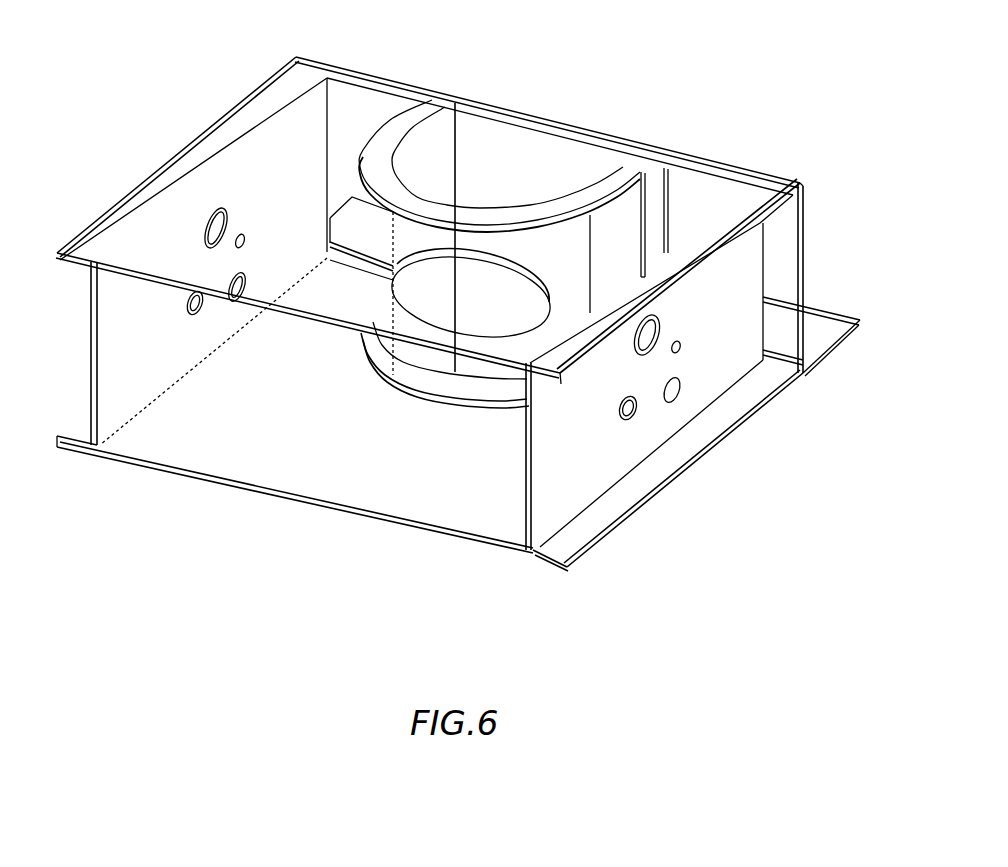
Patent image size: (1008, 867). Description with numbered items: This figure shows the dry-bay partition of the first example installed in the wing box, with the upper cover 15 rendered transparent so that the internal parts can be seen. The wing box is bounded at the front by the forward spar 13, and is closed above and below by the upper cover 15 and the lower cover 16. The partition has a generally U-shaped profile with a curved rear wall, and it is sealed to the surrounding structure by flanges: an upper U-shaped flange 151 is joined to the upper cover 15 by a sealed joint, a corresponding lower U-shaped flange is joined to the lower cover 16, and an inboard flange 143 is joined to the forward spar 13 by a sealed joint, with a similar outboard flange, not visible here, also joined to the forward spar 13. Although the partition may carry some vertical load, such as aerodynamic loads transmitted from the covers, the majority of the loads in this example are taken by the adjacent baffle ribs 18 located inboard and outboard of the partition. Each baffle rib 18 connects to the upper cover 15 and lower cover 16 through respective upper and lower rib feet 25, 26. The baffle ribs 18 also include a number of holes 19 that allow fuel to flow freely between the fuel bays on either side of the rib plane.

The forward spar 13 is at (805, 268).
The upper cover 15 is at (303, 318).
The lower cover 16 is at (240, 460).
The baffle rib 18 is at (123, 328).
The hole 19 is at (193, 313).
The upper rib foot 25 is at (67, 257).
The lower rib foot 26 is at (80, 427).
The inboard flange 143 is at (652, 220).
The upper U-shaped flange 151 is at (470, 210).